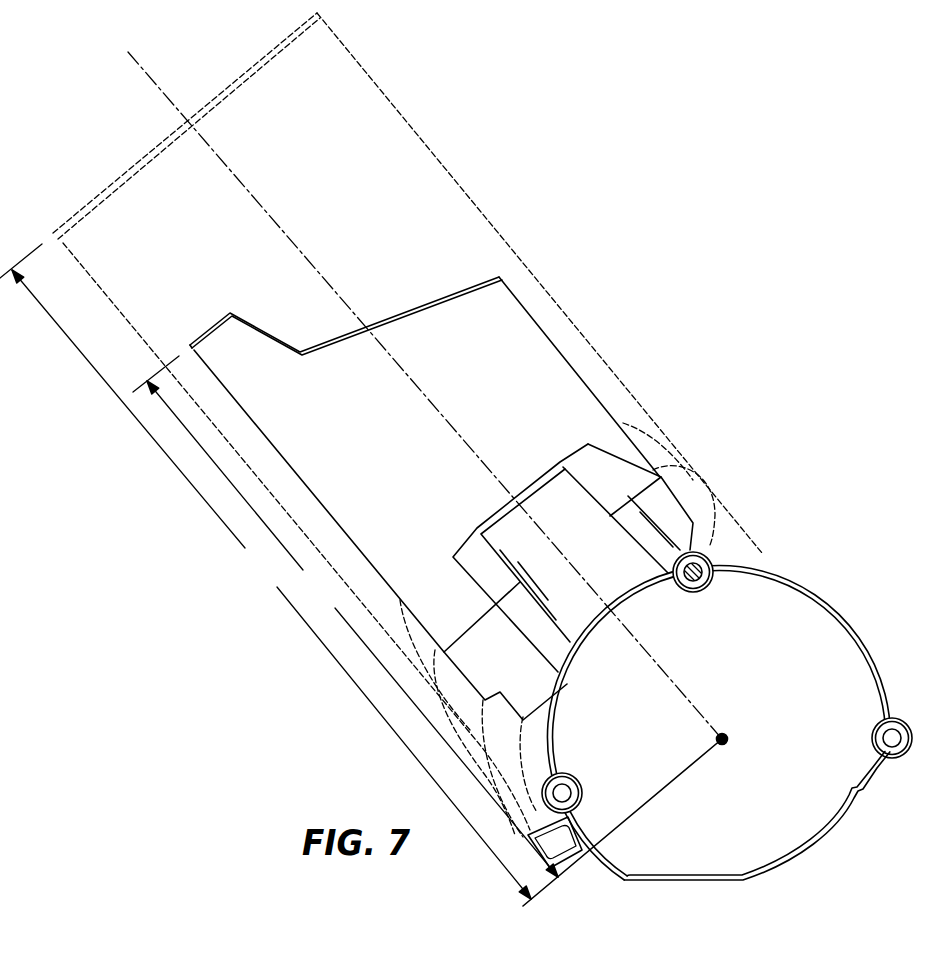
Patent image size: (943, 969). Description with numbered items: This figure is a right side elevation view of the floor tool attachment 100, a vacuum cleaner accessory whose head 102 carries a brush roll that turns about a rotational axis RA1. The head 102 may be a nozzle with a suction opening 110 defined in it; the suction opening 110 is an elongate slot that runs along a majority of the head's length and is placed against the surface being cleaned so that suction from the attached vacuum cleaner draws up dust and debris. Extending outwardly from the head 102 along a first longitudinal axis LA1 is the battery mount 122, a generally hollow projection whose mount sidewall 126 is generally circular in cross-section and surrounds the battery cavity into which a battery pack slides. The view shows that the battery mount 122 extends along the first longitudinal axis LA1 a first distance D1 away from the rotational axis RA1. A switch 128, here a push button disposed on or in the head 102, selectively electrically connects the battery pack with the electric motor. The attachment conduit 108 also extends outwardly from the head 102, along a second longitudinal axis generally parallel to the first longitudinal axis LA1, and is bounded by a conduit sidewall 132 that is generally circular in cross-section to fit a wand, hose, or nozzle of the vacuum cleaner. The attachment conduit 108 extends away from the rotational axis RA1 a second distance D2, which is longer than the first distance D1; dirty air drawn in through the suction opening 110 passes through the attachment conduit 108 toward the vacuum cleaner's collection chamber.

The floor tool attachment 100 is at (688, 262).
The head 102 is at (730, 528).
The attachment conduit 108 is at (405, 188).
The suction opening 110 is at (658, 888).
The battery mount 122 is at (440, 297).
The mount sidewall 126 is at (510, 345).
The switch 128 is at (545, 455).
The conduit sidewall 132 is at (274, 47).
The first longitudinal axis LA1 is at (488, 473).
The rotational axis RA1 is at (724, 737).
The first distance D1 is at (345, 616).
The second distance D2 is at (265, 571).